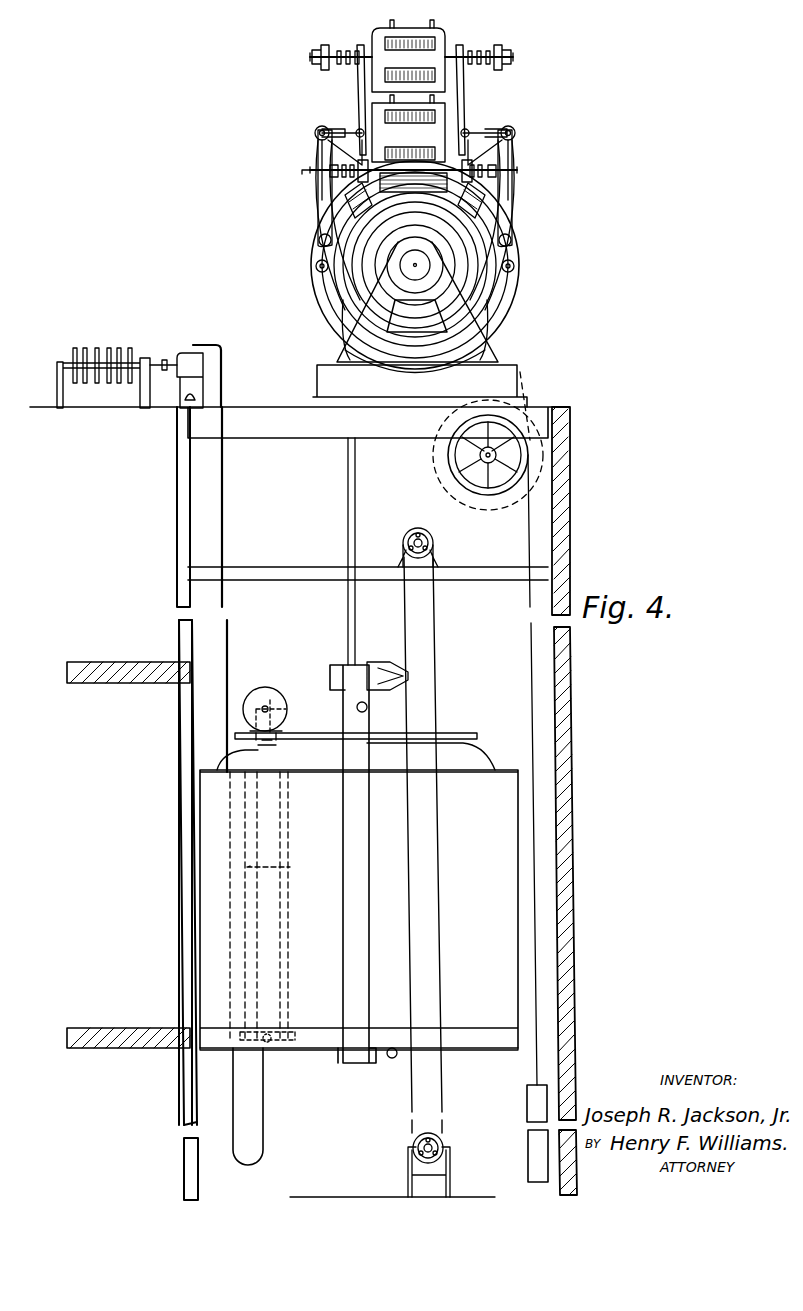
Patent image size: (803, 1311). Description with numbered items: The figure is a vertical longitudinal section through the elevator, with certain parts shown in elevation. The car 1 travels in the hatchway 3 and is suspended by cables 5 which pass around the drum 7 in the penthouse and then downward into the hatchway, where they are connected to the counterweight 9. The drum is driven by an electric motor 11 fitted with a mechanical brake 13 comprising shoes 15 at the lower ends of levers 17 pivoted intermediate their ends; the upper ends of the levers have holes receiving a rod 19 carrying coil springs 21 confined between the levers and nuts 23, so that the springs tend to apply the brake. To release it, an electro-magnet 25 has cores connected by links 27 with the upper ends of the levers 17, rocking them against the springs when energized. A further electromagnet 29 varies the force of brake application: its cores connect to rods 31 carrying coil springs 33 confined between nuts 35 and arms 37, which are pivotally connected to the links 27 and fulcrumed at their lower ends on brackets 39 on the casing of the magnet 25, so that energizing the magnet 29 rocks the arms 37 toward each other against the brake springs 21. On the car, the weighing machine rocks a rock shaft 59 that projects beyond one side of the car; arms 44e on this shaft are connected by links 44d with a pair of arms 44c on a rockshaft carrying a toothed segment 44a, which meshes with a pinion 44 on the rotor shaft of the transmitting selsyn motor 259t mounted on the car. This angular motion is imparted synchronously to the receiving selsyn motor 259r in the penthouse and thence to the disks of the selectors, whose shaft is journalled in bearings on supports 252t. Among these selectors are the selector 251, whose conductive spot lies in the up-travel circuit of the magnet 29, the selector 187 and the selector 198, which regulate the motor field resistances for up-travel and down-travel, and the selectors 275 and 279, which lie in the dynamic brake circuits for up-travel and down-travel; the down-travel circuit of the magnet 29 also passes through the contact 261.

The car 1 is at (505, 880).
The hatchway 3 is at (523, 730).
The cables 5 is at (356, 512).
The drum 7 is at (482, 292).
The counterweight 9 is at (527, 1093).
The electric motor 11 is at (492, 202).
The mechanical brake 13 is at (541, 253).
The shoes 15 is at (500, 278).
The levers 17 is at (512, 205).
The rod 19 is at (310, 172).
The coil springs 21 is at (498, 168).
The nuts 23 is at (515, 133).
The electro-magnet 25 is at (440, 120).
The links 27 is at (492, 130).
The electromagnet 29 is at (428, 55).
The rods 31 is at (516, 58).
The coil springs 33 is at (484, 50).
The nuts 35 is at (505, 52).
The arms 37 is at (464, 92).
The brackets 39 is at (460, 158).
The selector 187 is at (75, 347).
The selector 198 is at (85, 347).
The contact 261 is at (97, 347).
The selector 251 is at (109, 347).
The selector 279 is at (119, 347).
The selector 275 is at (145, 332).
The supports 252t is at (140, 396).
The receiving selsyn motor 259r is at (190, 352).
The transmitting selsyn motor 259t is at (268, 708).
The pinion 44 is at (275, 695).
The toothed segment 44a is at (280, 715).
The arms 44c is at (235, 776).
The links 44d is at (288, 862).
The arms 44e is at (280, 1055).
The rock shaft 59 is at (275, 1032).